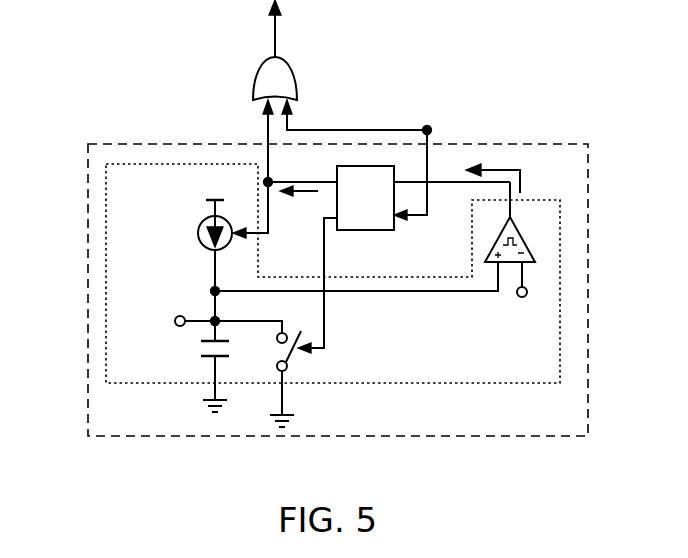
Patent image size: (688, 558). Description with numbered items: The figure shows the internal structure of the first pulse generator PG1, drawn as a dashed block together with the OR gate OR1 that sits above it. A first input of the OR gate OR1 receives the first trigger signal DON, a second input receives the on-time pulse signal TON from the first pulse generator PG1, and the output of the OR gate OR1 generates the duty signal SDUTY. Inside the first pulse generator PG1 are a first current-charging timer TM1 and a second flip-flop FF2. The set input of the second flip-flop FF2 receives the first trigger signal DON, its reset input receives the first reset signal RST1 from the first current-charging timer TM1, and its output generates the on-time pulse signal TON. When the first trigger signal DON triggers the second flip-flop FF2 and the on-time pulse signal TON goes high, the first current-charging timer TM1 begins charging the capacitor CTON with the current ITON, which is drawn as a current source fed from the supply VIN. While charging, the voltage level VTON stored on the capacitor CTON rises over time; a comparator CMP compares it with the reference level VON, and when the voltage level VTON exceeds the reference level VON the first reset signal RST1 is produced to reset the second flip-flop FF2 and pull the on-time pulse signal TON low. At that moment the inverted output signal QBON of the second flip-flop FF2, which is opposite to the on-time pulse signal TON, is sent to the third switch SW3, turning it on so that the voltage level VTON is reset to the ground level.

The first pulse generator PG1 is at (88, 330).
The first current-charging timer TM1 is at (421, 385).
The OR gate OR1 is at (290, 91).
The second flip-flop FF2 is at (355, 231).
The first reset signal RST1 is at (519, 179).
The comparator CMP is at (376, 255).
The third switch SW3 is at (297, 359).
The current ITON is at (212, 250).
The capacitor CTON is at (190, 366).
The voltage level VTON is at (168, 322).
The reference level VON is at (521, 307).
The input voltage VIN is at (211, 197).
The first trigger signal DON is at (383, 166).
The on-time pulse signal TON is at (299, 203).
The inverted output signal QBON is at (336, 285).
The duty signal SDUTY is at (242, 28).